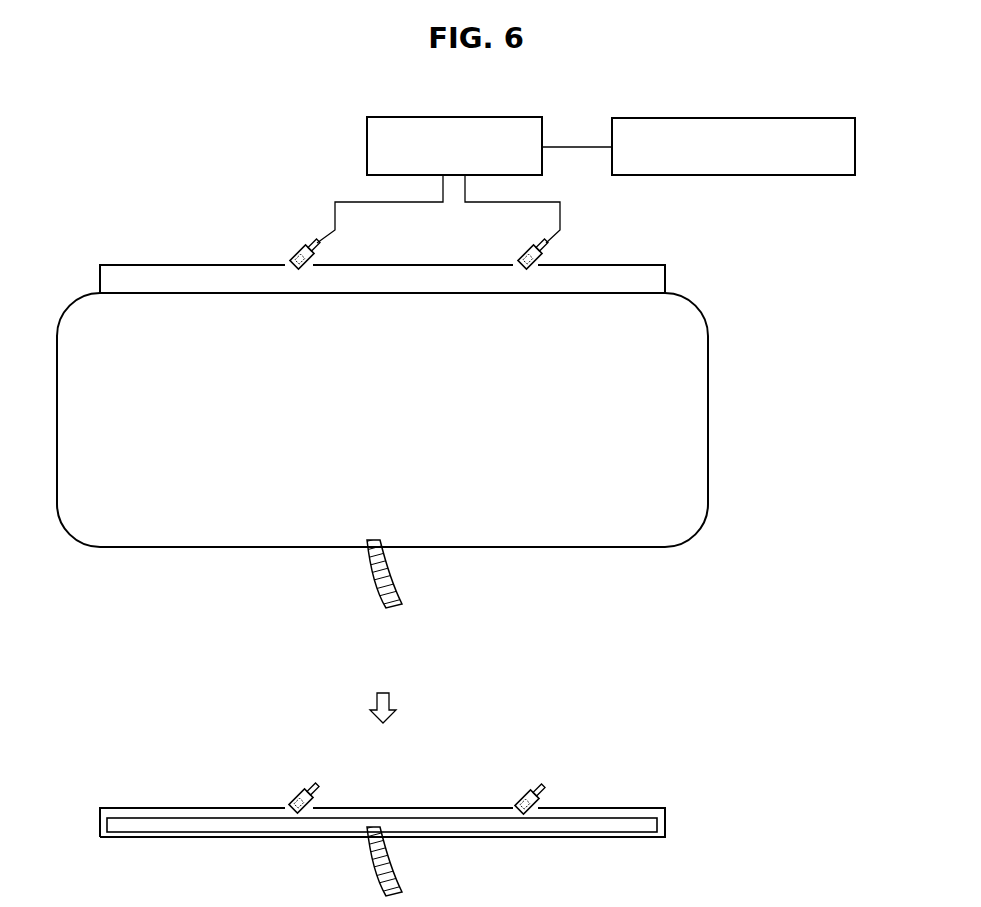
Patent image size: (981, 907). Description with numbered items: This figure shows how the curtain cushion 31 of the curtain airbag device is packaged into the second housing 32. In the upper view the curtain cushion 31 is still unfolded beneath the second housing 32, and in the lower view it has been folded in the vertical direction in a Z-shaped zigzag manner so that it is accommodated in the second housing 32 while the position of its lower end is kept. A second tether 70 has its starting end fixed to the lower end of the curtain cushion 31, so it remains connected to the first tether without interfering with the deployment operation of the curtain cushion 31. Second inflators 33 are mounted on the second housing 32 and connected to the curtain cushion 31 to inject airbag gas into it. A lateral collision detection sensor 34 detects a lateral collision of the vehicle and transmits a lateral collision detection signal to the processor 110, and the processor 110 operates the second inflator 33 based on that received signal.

The processor 110 is at (367, 141).
The lateral collision detection sensor 34 is at (857, 142).
The second housing 32 is at (100, 272).
The second inflator 33 is at (302, 244).
The curtain cushion 31 is at (715, 435).
The second tether 70 is at (388, 577).